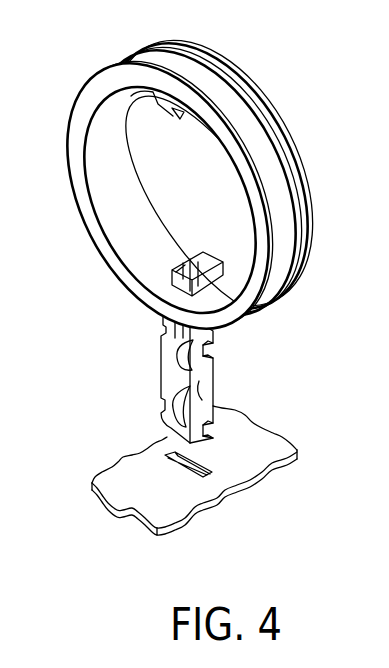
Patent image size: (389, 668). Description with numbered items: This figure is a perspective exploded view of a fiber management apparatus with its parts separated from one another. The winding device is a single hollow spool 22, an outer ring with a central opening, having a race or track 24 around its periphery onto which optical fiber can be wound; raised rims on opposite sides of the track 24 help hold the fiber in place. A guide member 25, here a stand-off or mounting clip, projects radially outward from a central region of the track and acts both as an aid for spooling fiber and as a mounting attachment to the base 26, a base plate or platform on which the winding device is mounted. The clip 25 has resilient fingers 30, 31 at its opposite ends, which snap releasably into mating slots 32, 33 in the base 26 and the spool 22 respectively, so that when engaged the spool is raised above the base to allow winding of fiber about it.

The spool 22 is at (199, 184).
The race or track 24 is at (280, 235).
The guide member 25 is at (191, 376).
The base 26 is at (208, 484).
The resilient fingers 30 is at (205, 417).
The resilient fingers 31 is at (197, 350).
The slot 32 is at (185, 462).
The slot 33 is at (217, 250).